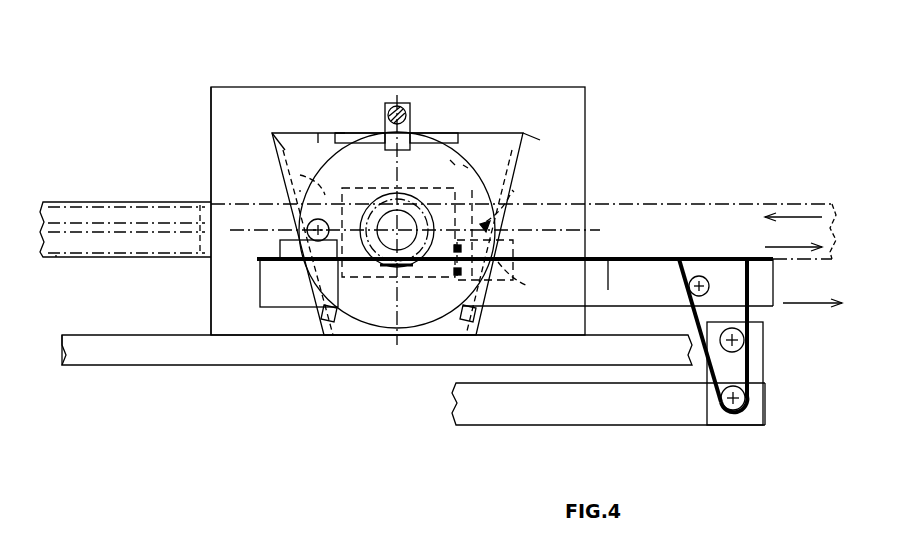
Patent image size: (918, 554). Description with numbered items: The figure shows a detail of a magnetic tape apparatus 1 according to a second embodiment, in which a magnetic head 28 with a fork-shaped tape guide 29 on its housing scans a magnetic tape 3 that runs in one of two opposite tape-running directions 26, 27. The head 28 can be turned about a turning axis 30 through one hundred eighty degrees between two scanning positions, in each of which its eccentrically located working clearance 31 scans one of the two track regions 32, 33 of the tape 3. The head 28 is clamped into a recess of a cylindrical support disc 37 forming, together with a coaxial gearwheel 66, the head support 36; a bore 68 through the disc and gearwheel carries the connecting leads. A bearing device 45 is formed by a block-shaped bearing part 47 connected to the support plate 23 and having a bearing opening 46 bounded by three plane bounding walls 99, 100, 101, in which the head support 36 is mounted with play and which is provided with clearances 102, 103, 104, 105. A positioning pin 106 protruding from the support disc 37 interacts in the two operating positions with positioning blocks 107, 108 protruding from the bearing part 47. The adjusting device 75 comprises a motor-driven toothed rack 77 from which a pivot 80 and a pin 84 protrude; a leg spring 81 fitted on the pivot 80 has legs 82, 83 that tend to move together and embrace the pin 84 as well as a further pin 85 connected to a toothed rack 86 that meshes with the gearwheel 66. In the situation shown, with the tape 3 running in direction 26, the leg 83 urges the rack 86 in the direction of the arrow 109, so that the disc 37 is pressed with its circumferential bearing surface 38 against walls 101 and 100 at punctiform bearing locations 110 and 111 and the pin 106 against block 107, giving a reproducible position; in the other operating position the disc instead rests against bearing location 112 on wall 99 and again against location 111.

The magnetic tape apparatus 1 is at (150, 388).
The magnetic tape 3 is at (648, 204).
The support plate 23 is at (118, 335).
The tape-running direction 26 is at (786, 260).
The tape-running direction 27 is at (792, 212).
The magnetic head 28 is at (312, 185).
The fork-shaped tape guide 29 is at (535, 198).
The turning axis 30 is at (393, 200).
The working clearance 31 is at (418, 270).
The track region 32 is at (58, 257).
The track region 33 is at (60, 205).
The head support 36 is at (335, 133).
The support disc 37 is at (452, 163).
The circumferential bearing surface 38 is at (466, 166).
The bearing device 45 is at (233, 85).
The bearing opening 46 is at (360, 330).
The bearing part 47 is at (263, 108).
The gearwheel 66 is at (410, 207).
The bore 68 is at (410, 260).
The adjusting device 75 is at (540, 430).
The toothed rack 77 is at (642, 425).
The pivot 80 is at (745, 400).
The leg spring 81 is at (718, 410).
The leg 82 is at (745, 275).
The leg 83 is at (684, 277).
The pin 84 is at (738, 344).
The pin 85 is at (705, 276).
The toothed rack 86 is at (608, 259).
The bounding wall 99 is at (300, 190).
The bounding wall 100 is at (318, 140).
The bounding wall 101 is at (512, 190).
The clearance 102 is at (282, 147).
The clearance 103 is at (528, 152).
The clearance 104 is at (462, 320).
The clearance 105 is at (330, 322).
The positioning pin 106 is at (312, 224).
The positioning block 107 is at (282, 250).
The positioning block 108 is at (505, 250).
The arrow 109 is at (810, 303).
The bearing location 110 is at (528, 288).
The bearing location 111 is at (413, 103).
The bearing location 112 is at (318, 278).